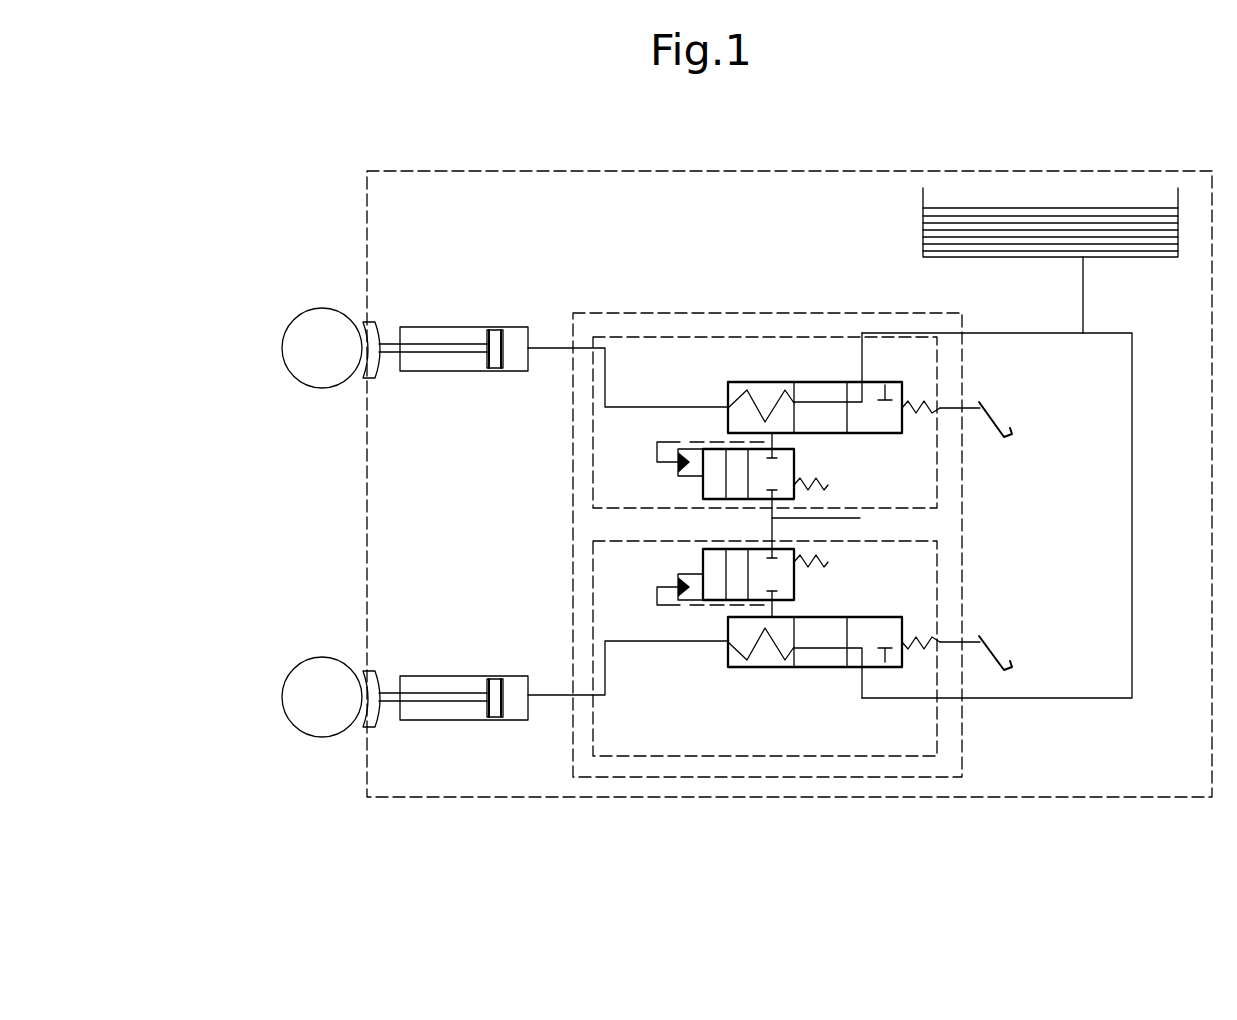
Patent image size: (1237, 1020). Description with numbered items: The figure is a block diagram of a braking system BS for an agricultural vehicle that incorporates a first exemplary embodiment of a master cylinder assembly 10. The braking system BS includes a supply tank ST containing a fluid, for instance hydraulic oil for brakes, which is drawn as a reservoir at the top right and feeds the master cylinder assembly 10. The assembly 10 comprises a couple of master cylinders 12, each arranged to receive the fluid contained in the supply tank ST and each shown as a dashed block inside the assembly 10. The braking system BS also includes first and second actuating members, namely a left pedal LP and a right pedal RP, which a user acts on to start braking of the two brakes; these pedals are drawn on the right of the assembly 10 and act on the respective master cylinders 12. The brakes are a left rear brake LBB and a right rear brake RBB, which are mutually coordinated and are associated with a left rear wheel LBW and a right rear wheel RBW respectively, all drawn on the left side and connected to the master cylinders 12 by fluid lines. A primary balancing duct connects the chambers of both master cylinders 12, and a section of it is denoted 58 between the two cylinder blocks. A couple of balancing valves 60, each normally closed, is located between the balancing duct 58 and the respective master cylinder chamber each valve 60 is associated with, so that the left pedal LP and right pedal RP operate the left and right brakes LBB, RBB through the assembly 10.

The braking system BS is at (788, 170).
The master cylinder assembly 10 is at (767, 312).
The master cylinder 12 is at (629, 330).
The balancing valve 60 is at (797, 459).
The balancing duct 58 is at (860, 518).
The supply tank ST is at (932, 212).
The left pedal LP is at (993, 412).
The right pedal RP is at (1002, 653).
The left rear brake LBB is at (441, 333).
The right rear brake RBB is at (441, 683).
The left rear wheel LBW is at (290, 322).
The right rear wheel RBW is at (290, 672).